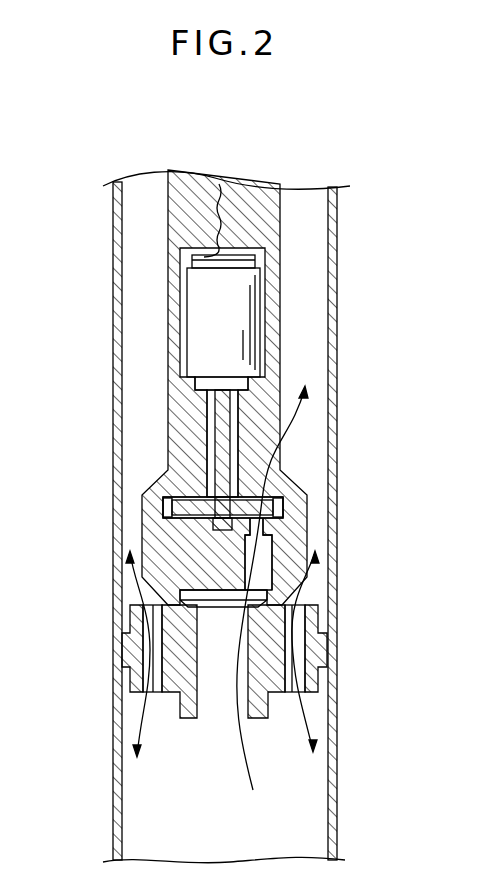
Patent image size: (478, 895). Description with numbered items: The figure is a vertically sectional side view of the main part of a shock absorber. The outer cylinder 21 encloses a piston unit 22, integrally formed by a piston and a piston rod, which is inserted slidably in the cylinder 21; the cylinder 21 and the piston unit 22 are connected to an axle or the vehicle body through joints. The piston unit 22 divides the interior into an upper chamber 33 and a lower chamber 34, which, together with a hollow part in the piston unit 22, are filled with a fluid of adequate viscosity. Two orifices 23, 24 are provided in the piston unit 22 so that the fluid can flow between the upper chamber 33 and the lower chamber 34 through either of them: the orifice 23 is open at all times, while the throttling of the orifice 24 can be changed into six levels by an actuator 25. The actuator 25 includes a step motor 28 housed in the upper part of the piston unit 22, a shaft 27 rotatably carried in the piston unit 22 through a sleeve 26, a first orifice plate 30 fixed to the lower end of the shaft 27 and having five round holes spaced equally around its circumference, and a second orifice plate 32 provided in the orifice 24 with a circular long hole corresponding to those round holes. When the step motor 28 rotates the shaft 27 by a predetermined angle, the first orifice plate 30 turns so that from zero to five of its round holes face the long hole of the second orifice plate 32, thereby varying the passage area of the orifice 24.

The cylinder 21 is at (337, 326).
The piston unit 22 is at (166, 390).
The orifice 23 is at (303, 645).
The orifice 24 is at (262, 545).
The actuator 25 is at (240, 430).
The sleeve 26 is at (215, 437).
The shaft 27 is at (213, 462).
The step motor 28 is at (205, 313).
The first orifice plate 30 is at (183, 513).
The second orifice plate 32 is at (283, 500).
The upper chamber 33 is at (323, 298).
The lower chamber 34 is at (219, 807).